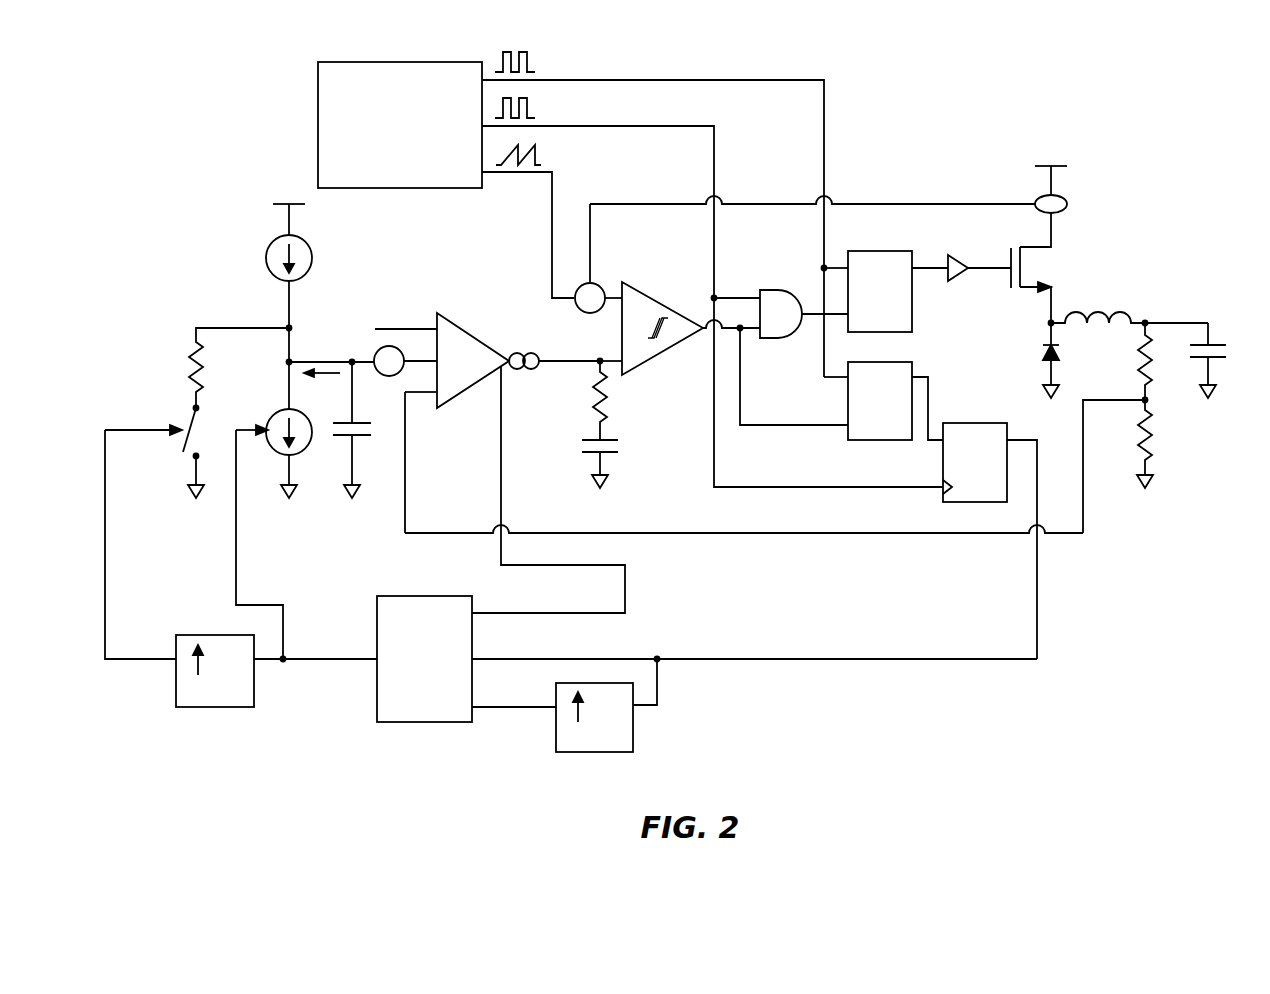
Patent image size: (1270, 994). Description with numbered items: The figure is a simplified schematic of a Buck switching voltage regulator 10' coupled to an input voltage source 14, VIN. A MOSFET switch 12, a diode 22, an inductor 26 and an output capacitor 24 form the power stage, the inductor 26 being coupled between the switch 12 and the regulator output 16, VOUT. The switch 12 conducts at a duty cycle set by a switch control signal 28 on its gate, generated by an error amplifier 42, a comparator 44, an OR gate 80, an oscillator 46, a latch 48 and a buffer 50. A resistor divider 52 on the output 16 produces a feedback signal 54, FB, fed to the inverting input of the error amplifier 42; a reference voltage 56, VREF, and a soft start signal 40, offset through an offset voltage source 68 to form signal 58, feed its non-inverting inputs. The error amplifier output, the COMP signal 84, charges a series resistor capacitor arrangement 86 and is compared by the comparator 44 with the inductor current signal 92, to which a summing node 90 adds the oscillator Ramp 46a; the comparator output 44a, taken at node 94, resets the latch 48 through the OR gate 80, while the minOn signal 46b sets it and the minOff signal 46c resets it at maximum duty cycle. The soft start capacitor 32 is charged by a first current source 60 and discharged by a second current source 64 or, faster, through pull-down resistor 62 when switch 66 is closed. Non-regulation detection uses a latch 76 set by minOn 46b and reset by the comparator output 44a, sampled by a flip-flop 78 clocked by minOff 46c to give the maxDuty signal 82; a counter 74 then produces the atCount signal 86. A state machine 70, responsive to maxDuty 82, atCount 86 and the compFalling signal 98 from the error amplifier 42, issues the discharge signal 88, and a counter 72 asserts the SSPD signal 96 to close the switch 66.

The switching voltage regulator 10' is at (1198, 77).
The switch 12 is at (1042, 268).
The input voltage source 14 is at (1060, 170).
The regulated output voltage 16 is at (1200, 322).
The diode 22 is at (1043, 355).
The output capacitor 24 is at (1217, 345).
The inductor 26 is at (1098, 302).
The switch control signal 28 is at (993, 272).
The soft start capacitor 32 is at (345, 437).
The soft start signal 40 is at (318, 358).
The error amplifier 42 is at (504, 360).
The comparator 44 is at (678, 315).
The comparator output signal 44a is at (702, 333).
The oscillator 46 is at (429, 120).
The Ramp signal 46a is at (510, 190).
The minOn signal 46b is at (622, 78).
The minOff signal 46c is at (598, 124).
The latch 48 is at (898, 291).
The buffer 50 is at (960, 255).
The resistor divider 52 is at (1160, 458).
The feedback signal 54 is at (1110, 407).
The reference voltage 56 is at (418, 327).
The offset signal 58 is at (413, 350).
The first current source 60 is at (268, 241).
The pull-down resistor 62 is at (185, 356).
The second current source 64 is at (270, 418).
The switch 66 is at (189, 422).
The offset voltage source 68 is at (388, 378).
The state machine 70 is at (473, 657).
The counter 72 is at (215, 671).
The counter 74 is at (552, 717).
The latch 76 is at (895, 401).
The flip-flop 78 is at (990, 541).
The OR gate 80 is at (804, 314).
The maxDuty signal 82 is at (626, 658).
The COMP signal 84 is at (565, 372).
The resistor capacitor arrangement 86 is at (625, 416).
The discharge signal 88 is at (318, 662).
The summing circuit 90 is at (598, 285).
The inductor current signal 92 is at (650, 202).
The comparator input 94 is at (622, 292).
The SSPD signal 96 is at (145, 662).
The compFalling signal 98 is at (628, 588).